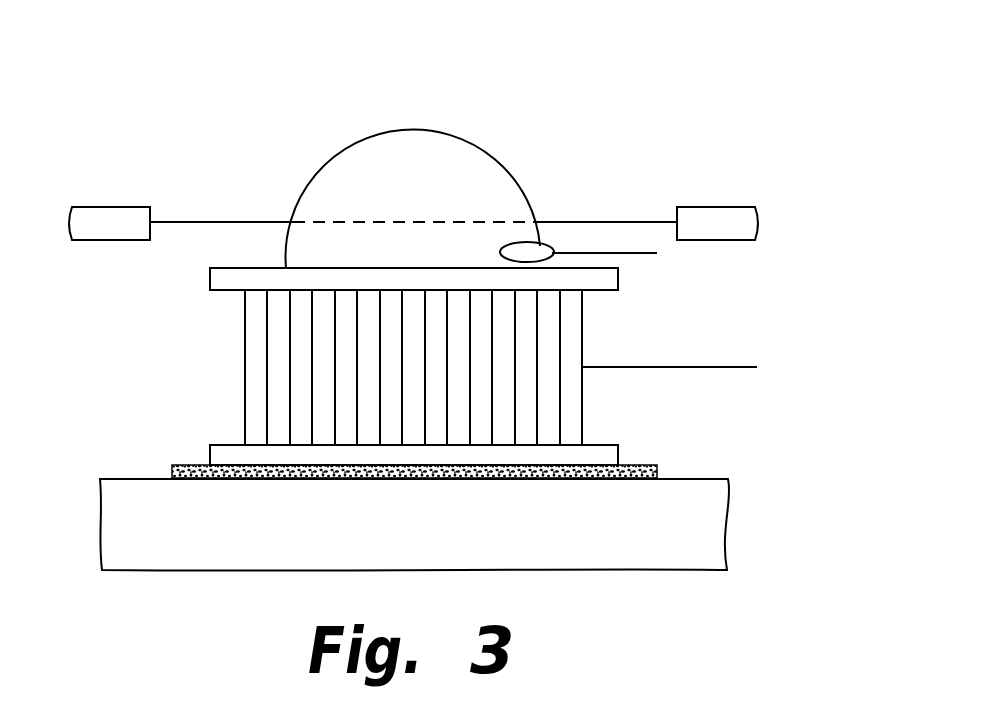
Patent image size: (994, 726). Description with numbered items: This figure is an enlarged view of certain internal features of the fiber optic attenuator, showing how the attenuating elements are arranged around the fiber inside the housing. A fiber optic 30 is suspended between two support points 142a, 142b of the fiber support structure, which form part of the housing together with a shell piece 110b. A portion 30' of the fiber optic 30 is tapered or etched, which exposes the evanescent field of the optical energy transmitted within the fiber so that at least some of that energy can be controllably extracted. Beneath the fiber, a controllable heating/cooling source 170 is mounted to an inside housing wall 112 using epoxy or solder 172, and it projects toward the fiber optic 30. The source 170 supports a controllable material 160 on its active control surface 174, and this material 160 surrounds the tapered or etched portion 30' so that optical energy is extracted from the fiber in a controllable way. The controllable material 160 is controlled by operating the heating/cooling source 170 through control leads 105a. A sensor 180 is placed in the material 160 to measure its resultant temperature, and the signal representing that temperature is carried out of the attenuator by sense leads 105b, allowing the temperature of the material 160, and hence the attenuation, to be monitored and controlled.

The fiber optic 30 is at (413, 172).
The tapered or etched portion of fiber optic 30' is at (416, 132).
The control leads 105a is at (737, 367).
The sense leads 105b is at (637, 253).
The shell piece 110b is at (137, 522).
The inside housing wall 112 is at (704, 465).
The support point 142a is at (150, 220).
The support point 142b is at (677, 220).
The controllable material 160 is at (447, 152).
The controllable heating/cooling source 170 is at (208, 338).
The epoxy or solder 172 is at (630, 467).
The active control surface 174 is at (252, 268).
The sensor 180 is at (528, 250).